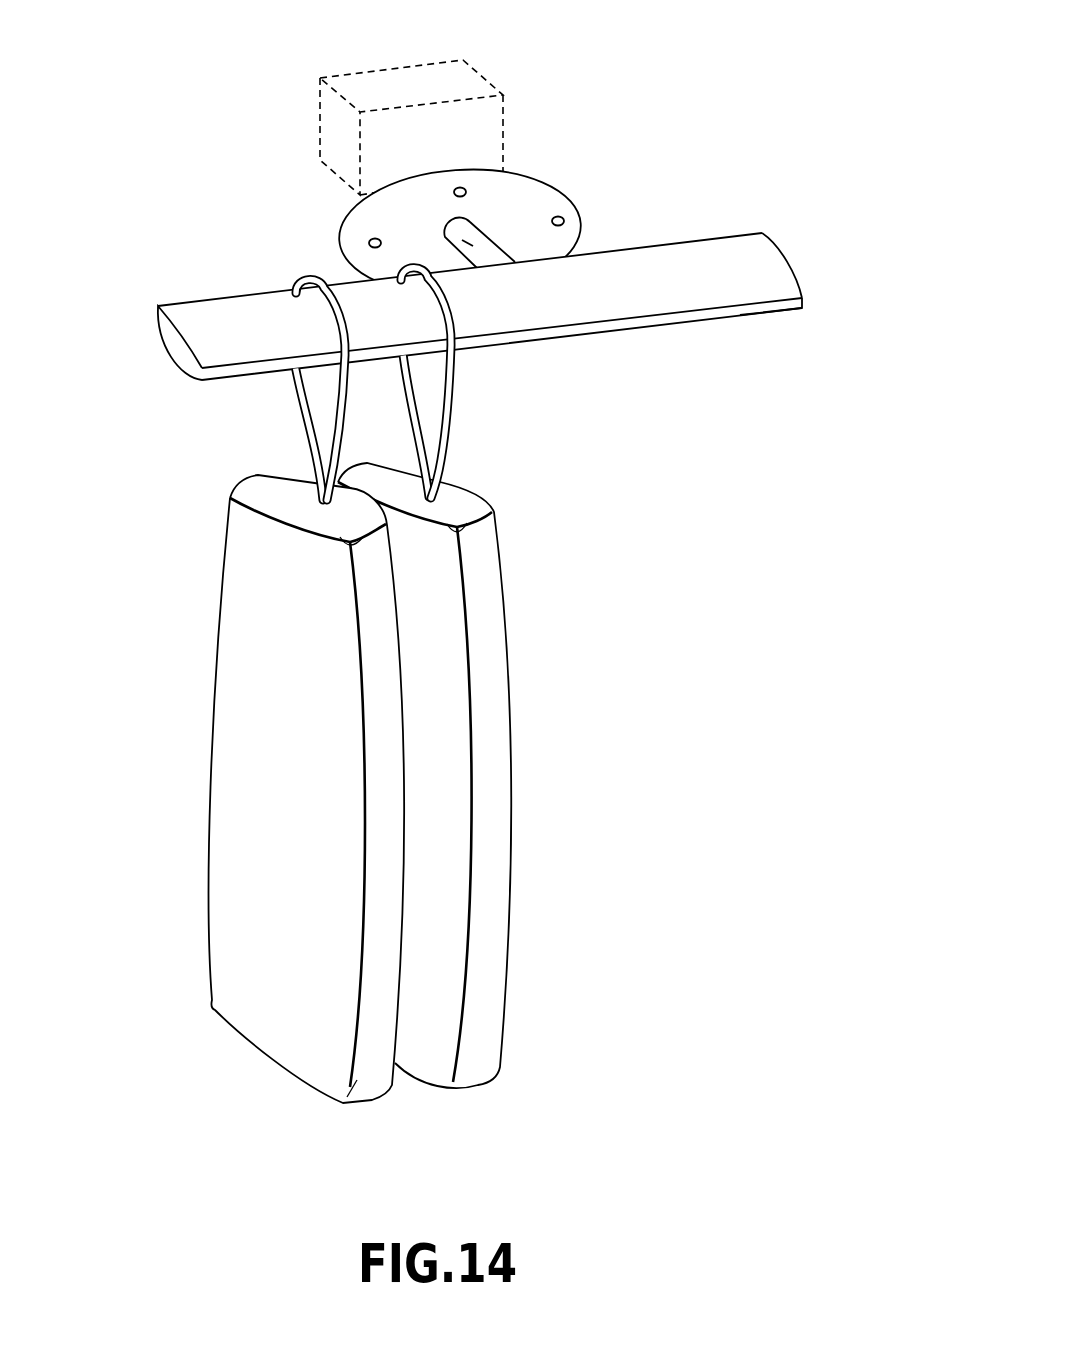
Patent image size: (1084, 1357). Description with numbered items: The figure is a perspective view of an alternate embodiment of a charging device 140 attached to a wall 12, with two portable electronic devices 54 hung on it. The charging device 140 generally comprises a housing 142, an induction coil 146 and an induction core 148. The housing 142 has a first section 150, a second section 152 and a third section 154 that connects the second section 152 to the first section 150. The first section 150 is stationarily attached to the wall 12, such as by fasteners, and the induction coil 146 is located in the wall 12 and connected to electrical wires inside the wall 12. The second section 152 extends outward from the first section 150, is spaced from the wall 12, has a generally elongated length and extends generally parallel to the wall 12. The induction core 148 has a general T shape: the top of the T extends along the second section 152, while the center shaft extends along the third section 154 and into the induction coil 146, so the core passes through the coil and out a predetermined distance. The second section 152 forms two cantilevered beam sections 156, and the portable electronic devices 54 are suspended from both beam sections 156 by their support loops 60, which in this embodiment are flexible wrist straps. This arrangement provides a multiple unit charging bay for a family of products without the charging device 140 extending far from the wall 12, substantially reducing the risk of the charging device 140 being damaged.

The wall 12 is at (252, 232).
The portable electronic device 54 is at (372, 1098).
The support loop 60 is at (345, 425).
The charging device 140 is at (481, 316).
The housing 142 is at (803, 308).
The induction coil 146 is at (483, 73).
The induction core 148 is at (715, 273).
The first section 150 is at (534, 198).
The second section 152 is at (798, 281).
The third section 154 is at (445, 228).
The cantilevered beam sections 156 is at (175, 352).